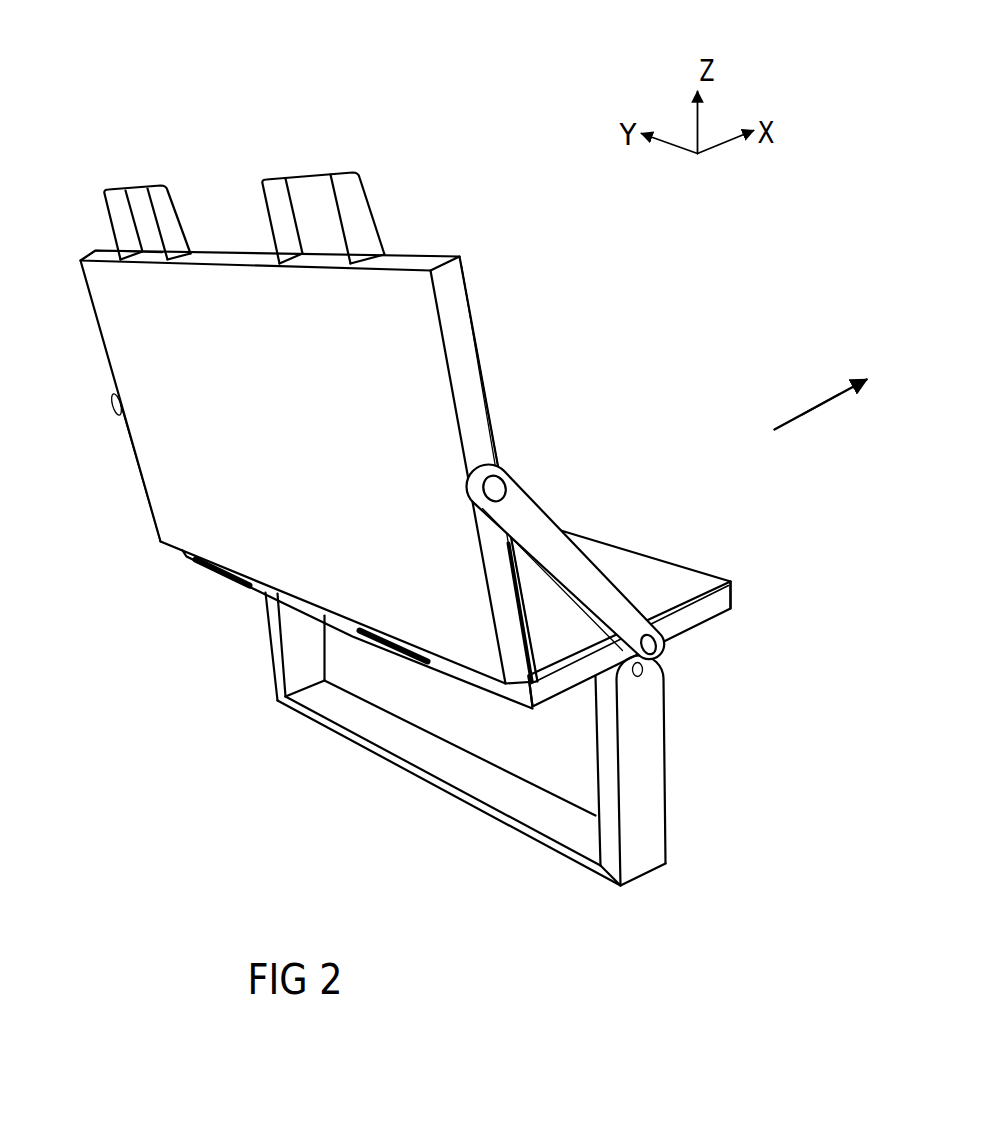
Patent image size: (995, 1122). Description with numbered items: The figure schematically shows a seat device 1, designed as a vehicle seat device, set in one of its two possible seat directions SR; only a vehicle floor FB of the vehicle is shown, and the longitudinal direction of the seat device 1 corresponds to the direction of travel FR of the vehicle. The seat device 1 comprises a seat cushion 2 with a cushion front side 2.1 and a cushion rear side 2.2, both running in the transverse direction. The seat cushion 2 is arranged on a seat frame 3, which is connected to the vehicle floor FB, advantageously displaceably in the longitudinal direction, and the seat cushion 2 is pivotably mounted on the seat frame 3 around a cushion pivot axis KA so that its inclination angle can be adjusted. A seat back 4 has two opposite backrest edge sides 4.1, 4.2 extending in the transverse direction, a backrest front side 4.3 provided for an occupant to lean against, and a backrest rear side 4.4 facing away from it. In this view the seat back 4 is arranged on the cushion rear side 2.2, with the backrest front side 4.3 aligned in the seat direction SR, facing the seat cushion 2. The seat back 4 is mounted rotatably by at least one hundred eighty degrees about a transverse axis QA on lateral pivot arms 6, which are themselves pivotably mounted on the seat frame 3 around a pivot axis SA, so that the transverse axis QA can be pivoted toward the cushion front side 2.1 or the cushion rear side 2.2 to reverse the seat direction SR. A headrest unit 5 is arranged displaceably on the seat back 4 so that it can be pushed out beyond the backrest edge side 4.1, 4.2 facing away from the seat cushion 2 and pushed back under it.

The seat device 1 is at (147, 105).
The seat cushion 2 is at (630, 562).
The cushion front side 2.1 is at (729, 584).
The cushion rear side 2.2 is at (517, 687).
The seat frame 3 is at (650, 798).
The seat back 4 is at (143, 360).
The backrest edge side 4.1 is at (100, 248).
The backrest edge side 4.2 is at (168, 545).
The backrest front side 4.3 is at (469, 284).
The backrest rear side 4.4 is at (157, 455).
The headrest unit 5 is at (167, 197).
The pivot arm 6 is at (547, 528).
The transverse axis QA is at (497, 485).
The pivot axis SA is at (661, 645).
The cushion pivot axis KA is at (650, 670).
The vehicle floor FB is at (358, 738).
The seat direction SR is at (821, 401).
The direction of travel FR is at (840, 413).